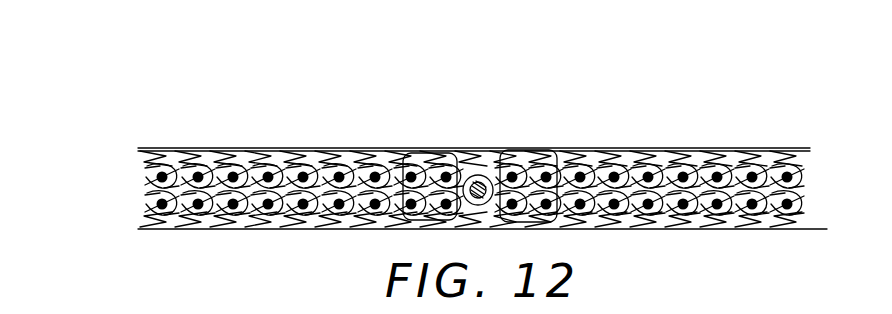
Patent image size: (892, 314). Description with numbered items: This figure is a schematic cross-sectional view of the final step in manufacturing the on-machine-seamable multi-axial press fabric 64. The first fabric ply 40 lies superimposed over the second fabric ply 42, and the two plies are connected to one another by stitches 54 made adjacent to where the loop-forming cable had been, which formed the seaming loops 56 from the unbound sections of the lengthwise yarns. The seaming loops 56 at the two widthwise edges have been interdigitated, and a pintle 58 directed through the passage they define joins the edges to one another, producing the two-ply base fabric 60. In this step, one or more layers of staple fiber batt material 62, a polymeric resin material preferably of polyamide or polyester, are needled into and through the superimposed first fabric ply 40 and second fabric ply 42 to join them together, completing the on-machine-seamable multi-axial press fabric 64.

The first fabric ply 40 is at (149, 176).
The second fabric ply 42 is at (148, 197).
The stitches 54 is at (432, 148).
The seaming loops 56 is at (468, 206).
The pintle 58 is at (489, 203).
The two-ply base fabric 60 is at (812, 170).
The staple fiber batt material 62 is at (740, 150).
The on-machine-seamable multi-axial press fabric 64 is at (506, 65).